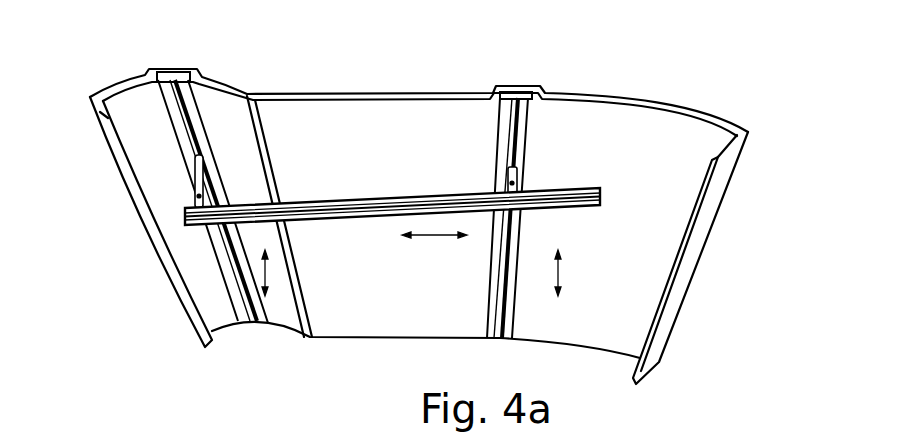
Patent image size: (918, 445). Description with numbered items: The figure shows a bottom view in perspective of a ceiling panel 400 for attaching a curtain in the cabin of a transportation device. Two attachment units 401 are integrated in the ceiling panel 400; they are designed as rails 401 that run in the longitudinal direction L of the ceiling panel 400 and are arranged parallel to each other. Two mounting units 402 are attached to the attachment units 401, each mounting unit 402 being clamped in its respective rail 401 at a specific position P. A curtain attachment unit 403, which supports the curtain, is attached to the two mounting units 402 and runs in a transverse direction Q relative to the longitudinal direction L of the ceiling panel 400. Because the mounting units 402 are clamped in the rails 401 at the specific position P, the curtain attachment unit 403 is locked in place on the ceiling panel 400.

The ceiling panel 400 is at (710, 102).
The attachment unit 401 is at (176, 78).
The mounting unit 402 is at (197, 193).
The curtain attachment unit 403 is at (337, 218).
The specific position P is at (199, 154).
The transverse direction Q is at (434, 247).
The longitudinal direction L is at (421, 273).